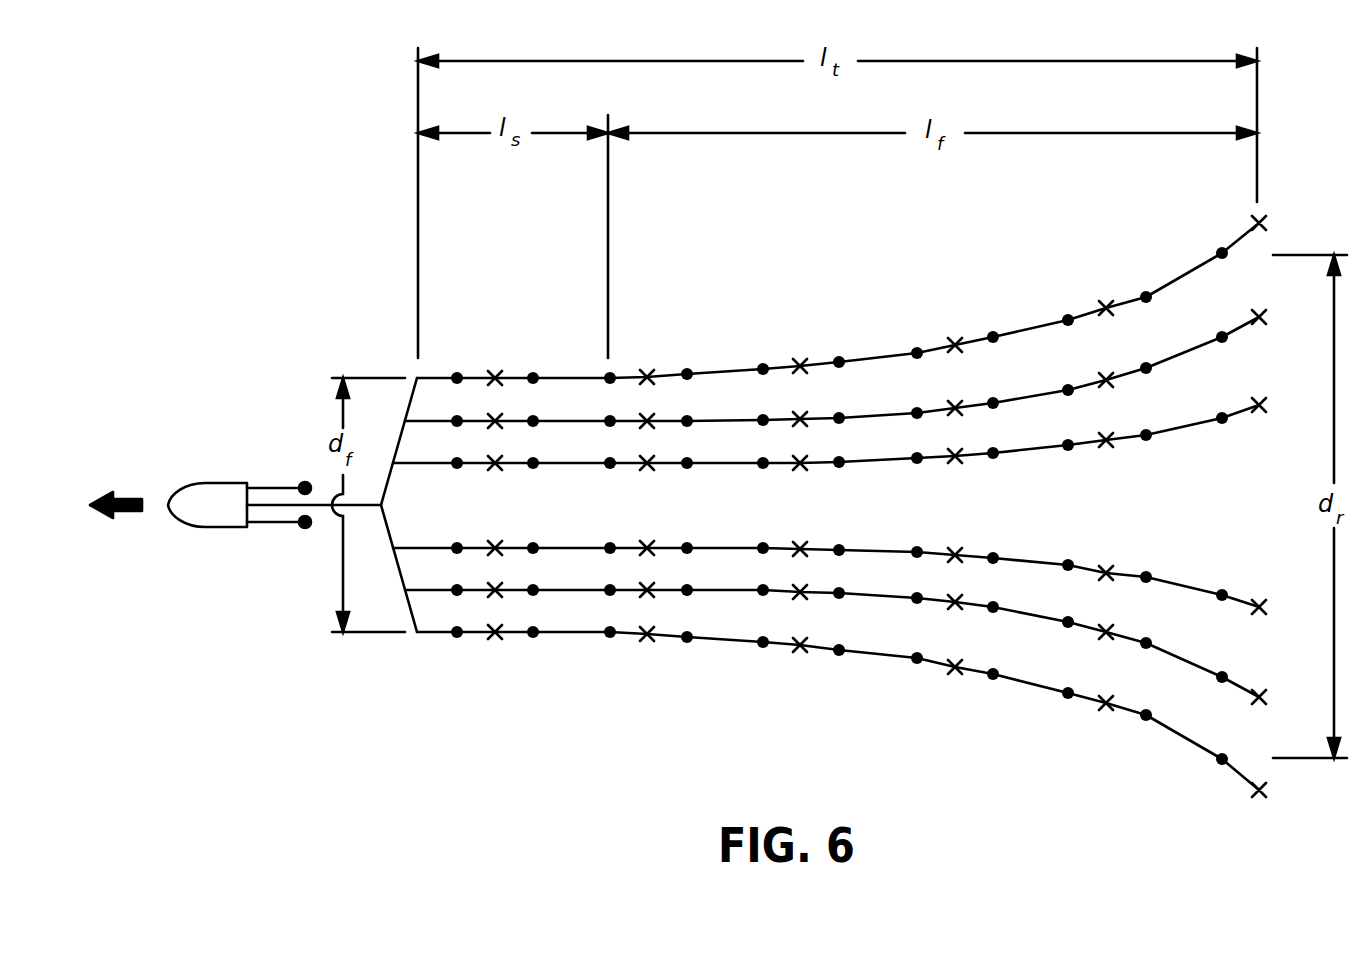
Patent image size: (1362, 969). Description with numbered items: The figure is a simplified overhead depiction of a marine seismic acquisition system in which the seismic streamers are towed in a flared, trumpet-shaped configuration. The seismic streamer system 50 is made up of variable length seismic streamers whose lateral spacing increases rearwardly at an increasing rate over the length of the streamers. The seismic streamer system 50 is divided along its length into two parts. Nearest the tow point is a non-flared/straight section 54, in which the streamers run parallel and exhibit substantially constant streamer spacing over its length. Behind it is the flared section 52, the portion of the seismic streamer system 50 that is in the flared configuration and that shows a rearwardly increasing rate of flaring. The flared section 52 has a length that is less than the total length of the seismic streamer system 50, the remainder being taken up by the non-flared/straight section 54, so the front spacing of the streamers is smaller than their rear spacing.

The seismic streamer system 50 is at (823, 505).
The flared section 52 is at (841, 299).
The non-flared/straight section 54 is at (535, 300).